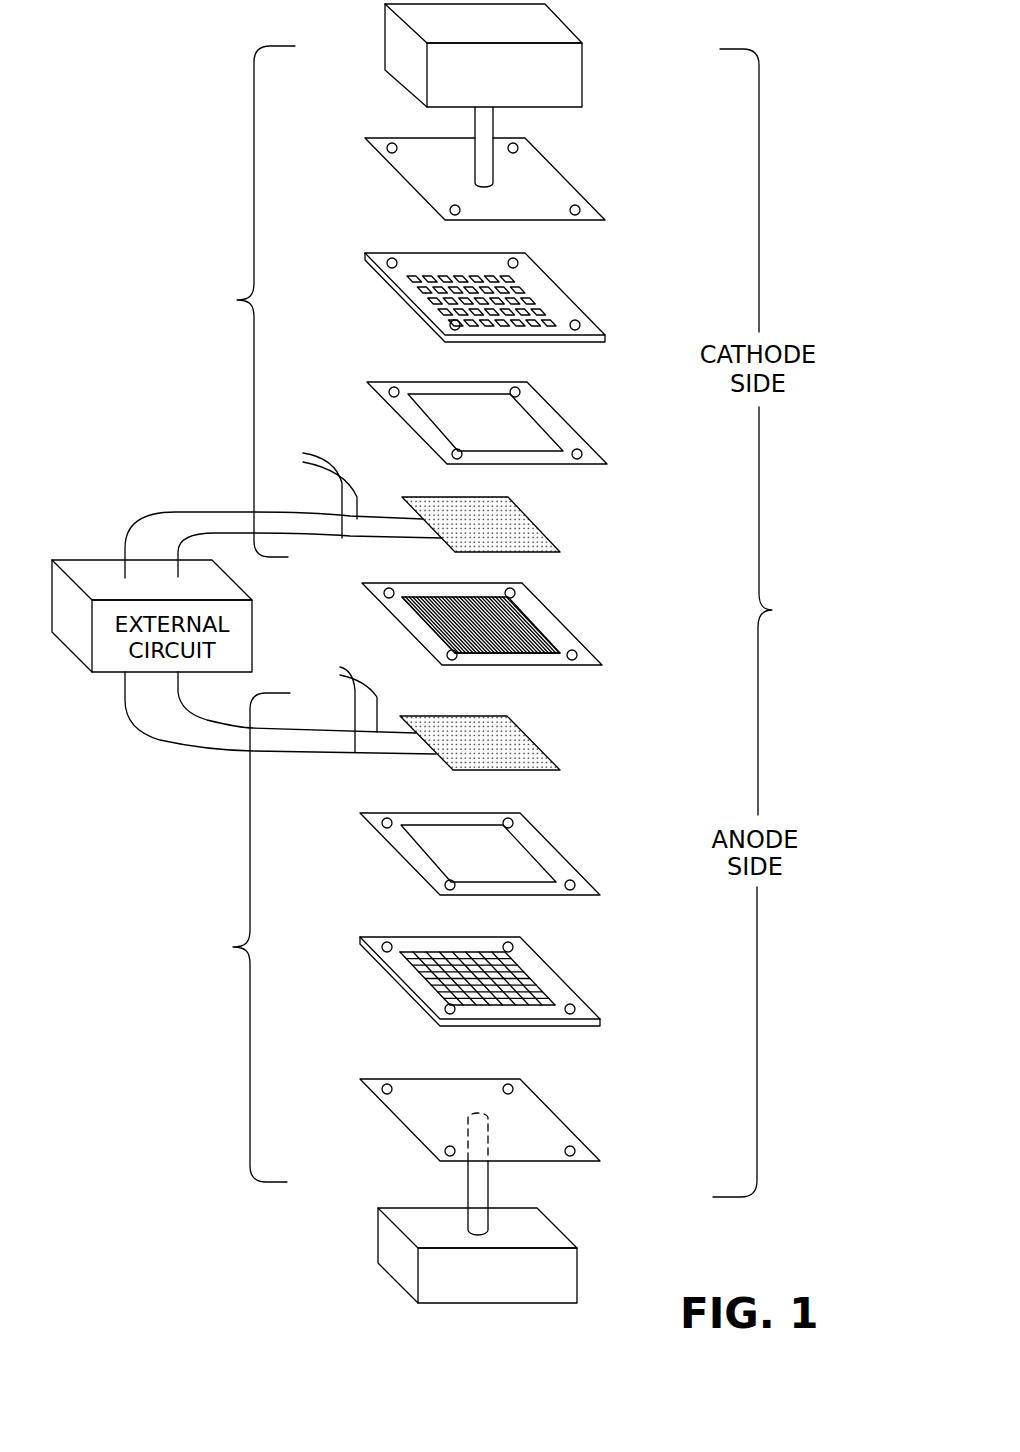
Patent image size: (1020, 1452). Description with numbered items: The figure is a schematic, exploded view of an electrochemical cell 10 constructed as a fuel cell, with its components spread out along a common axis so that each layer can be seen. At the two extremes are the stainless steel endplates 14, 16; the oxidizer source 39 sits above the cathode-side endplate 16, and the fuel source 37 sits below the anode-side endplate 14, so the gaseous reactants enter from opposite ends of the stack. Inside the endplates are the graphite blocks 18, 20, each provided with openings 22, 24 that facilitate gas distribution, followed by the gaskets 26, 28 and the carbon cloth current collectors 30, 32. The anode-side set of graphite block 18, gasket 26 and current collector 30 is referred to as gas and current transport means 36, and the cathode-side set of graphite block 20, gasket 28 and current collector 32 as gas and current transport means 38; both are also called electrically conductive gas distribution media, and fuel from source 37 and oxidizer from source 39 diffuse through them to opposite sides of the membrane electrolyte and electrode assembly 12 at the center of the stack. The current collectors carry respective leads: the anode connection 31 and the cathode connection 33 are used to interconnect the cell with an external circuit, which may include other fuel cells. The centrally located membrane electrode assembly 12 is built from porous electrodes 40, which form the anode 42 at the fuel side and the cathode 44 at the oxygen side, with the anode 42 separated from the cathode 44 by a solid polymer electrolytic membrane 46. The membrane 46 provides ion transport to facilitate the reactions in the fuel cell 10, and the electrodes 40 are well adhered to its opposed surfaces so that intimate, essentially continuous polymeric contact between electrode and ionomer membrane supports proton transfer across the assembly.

The electrochemical cell 10 is at (772, 610).
The membrane electrolyte and electrode assembly 12 is at (530, 629).
The endplate 14 is at (540, 1115).
The endplate 16 is at (568, 199).
The graphite block 18 is at (563, 985).
The graphite block 20 is at (563, 307).
The openings 22 is at (507, 960).
The openings 24 is at (518, 297).
The gasket 26 is at (553, 856).
The gasket 28 is at (560, 428).
The carbon cloth current collector 30 is at (523, 747).
The anode connection 31 is at (345, 703).
The carbon cloth current collector 32 is at (527, 529).
The cathode connection 33 is at (315, 491).
The gas and current transport means 36 is at (233, 947).
The fuel source 37 is at (517, 1222).
The gas and current transport means 38 is at (237, 300).
The oxidizer source 39 is at (573, 68).
The porous electrodes 40 is at (546, 629).
The anode 42 is at (525, 643).
The cathode 44 is at (522, 632).
The solid polymer electrolytic membrane 46 is at (590, 653).